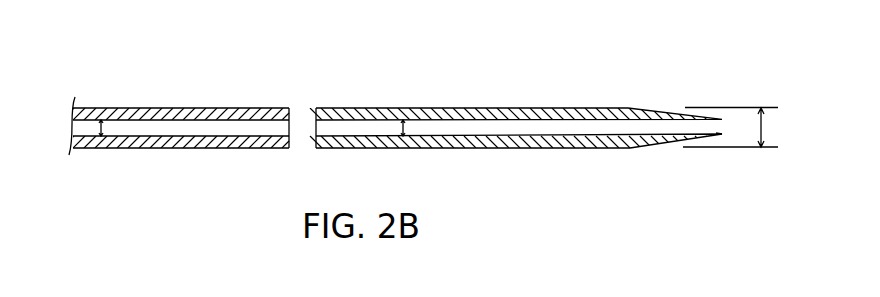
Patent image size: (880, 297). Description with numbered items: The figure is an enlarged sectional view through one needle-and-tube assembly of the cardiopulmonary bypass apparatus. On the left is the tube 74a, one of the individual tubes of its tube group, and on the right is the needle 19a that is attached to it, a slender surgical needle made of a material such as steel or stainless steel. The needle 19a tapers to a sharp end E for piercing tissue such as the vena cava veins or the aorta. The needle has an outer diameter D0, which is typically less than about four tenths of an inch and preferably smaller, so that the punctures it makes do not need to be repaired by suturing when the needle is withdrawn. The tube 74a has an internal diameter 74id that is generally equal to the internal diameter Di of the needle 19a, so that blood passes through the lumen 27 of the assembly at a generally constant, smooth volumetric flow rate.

The tube 74a is at (137, 108).
The internal diameter of tube 74id is at (99, 128).
The needle 19a is at (463, 108).
The lumen 27 is at (508, 125).
The internal diameter of needle Di is at (402, 123).
The outer diameter of needle D0 is at (765, 126).
The sharp end of needle E is at (720, 133).